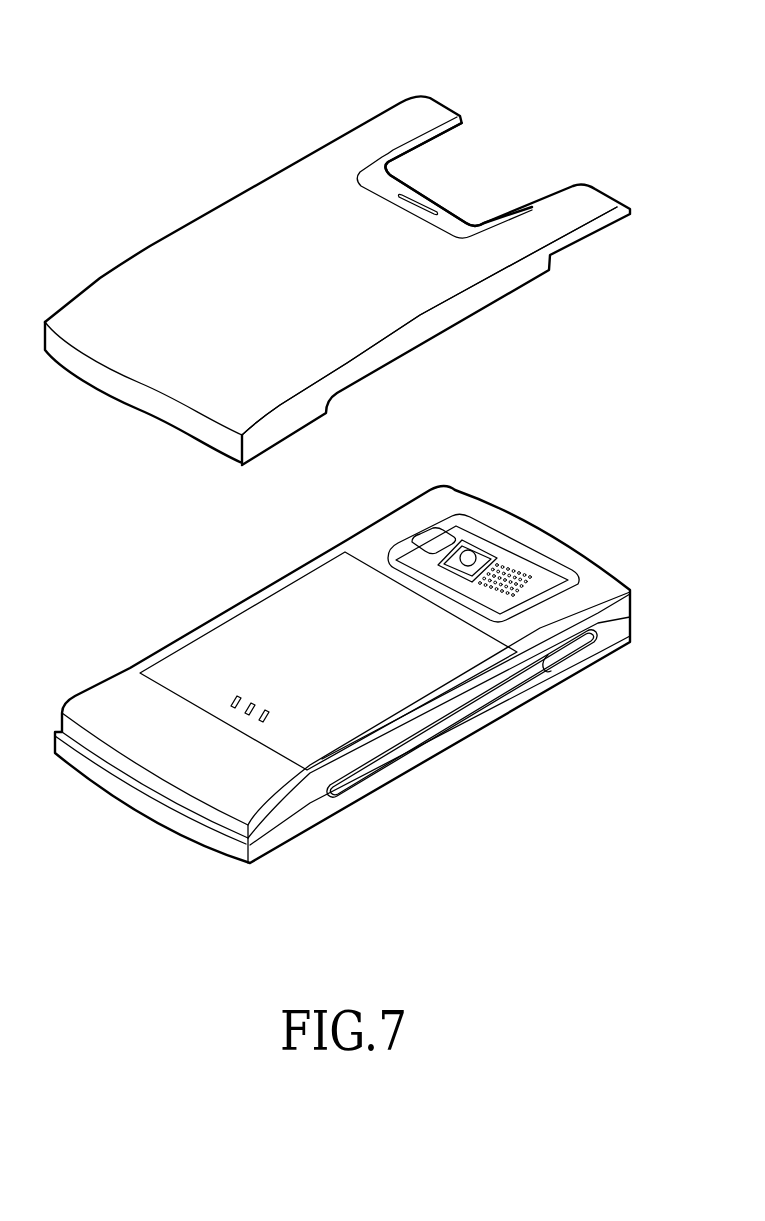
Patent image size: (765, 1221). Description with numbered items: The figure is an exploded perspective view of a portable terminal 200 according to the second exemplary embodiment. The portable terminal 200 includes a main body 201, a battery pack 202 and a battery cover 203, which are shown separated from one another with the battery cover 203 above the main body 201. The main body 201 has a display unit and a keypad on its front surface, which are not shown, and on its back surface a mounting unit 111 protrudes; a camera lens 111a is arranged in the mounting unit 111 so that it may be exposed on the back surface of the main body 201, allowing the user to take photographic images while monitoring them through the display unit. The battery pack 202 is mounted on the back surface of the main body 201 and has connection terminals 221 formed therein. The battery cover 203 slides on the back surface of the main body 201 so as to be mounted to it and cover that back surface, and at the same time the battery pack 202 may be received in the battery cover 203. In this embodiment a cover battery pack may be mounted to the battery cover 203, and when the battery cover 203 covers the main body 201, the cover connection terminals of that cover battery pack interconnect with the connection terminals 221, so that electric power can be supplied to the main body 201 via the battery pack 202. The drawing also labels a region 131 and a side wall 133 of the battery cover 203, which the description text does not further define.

The portable terminal 200 is at (323, 21).
The battery cover 203 is at (226, 216).
The camera opening (notch) in battery cover 131 is at (473, 177).
The side wall of battery cover 133 is at (287, 428).
The main body 201 is at (450, 766).
The battery pack 202 is at (280, 610).
The connection terminals 221 is at (230, 697).
The mounting unit 111 is at (488, 528).
The camera lens 111a is at (470, 558).